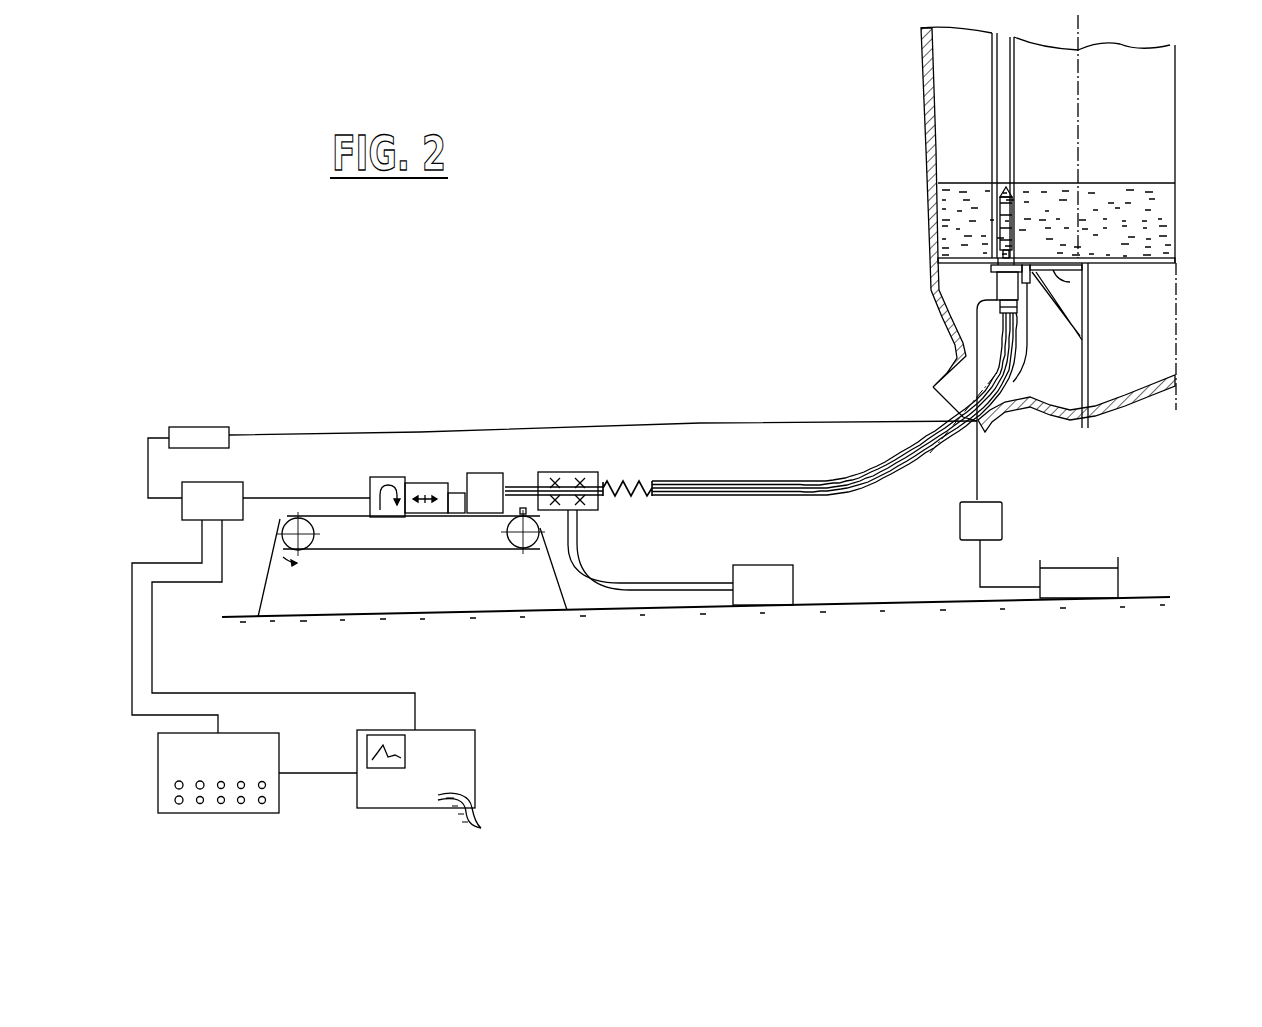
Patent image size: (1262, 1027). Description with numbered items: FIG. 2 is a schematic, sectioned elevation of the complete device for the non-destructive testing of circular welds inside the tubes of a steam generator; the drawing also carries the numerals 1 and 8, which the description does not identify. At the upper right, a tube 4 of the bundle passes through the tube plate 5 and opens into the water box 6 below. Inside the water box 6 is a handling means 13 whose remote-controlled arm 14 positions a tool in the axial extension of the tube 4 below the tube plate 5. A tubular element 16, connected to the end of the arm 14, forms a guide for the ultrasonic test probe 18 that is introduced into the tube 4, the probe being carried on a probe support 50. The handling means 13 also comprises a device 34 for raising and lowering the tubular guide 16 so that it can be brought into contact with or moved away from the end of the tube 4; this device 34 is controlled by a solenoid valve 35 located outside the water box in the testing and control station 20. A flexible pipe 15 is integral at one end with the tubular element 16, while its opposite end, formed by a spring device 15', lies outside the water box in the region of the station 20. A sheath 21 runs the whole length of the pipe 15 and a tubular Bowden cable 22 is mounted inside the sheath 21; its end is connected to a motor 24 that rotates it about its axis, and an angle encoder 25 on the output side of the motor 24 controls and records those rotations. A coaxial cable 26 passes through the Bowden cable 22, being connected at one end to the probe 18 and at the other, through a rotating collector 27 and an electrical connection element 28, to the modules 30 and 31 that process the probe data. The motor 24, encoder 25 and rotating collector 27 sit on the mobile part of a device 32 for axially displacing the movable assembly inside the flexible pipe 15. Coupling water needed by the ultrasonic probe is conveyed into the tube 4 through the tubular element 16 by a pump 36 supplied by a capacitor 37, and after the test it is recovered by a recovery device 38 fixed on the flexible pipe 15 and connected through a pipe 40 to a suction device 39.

The vessel 1 is at (903, 62).
The tube 4 is at (992, 113).
The tube plate 5 is at (955, 195).
The test probe 18 is at (1000, 211).
The probe support 50 is at (1000, 250).
The tubular element 16 is at (1005, 292).
The arm 14 is at (1055, 271).
The device for raising and lowering 34 is at (1088, 294).
The handling means 13 is at (1072, 323).
The water box 6 is at (1063, 380).
The pipe wall 8 is at (1018, 428).
The flexible pipe 15 is at (839, 389).
The spring device 15' is at (630, 420).
The recovery device 38 is at (591, 472).
The rotating collector 27 is at (490, 474).
The angle encoder 25 is at (438, 483).
The motor 24 is at (393, 478).
The testing and control station 20 is at (330, 424).
The electrical connection element 28 is at (236, 483).
The solenoid valve 35 is at (193, 437).
The coaxial cable 26 is at (265, 496).
The device for axially displacing the movable assembly 32 is at (349, 598).
The Bowden cable 22 is at (457, 517).
The sheath 21 is at (515, 494).
The pipe 40 is at (643, 586).
The suction device 39 is at (755, 588).
The pump 36 is at (990, 520).
The capacitor 37 is at (1098, 577).
The module for processing data 30 is at (215, 813).
The module for processing data 31 is at (418, 802).